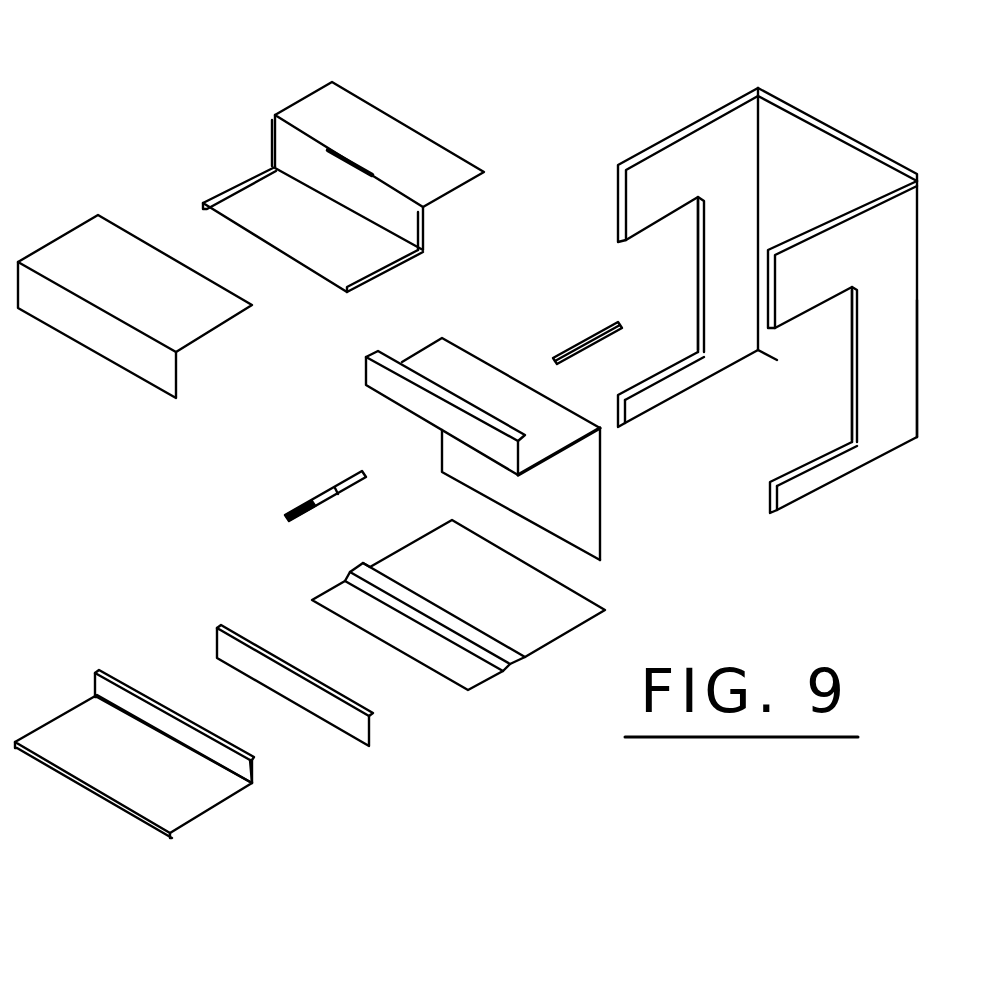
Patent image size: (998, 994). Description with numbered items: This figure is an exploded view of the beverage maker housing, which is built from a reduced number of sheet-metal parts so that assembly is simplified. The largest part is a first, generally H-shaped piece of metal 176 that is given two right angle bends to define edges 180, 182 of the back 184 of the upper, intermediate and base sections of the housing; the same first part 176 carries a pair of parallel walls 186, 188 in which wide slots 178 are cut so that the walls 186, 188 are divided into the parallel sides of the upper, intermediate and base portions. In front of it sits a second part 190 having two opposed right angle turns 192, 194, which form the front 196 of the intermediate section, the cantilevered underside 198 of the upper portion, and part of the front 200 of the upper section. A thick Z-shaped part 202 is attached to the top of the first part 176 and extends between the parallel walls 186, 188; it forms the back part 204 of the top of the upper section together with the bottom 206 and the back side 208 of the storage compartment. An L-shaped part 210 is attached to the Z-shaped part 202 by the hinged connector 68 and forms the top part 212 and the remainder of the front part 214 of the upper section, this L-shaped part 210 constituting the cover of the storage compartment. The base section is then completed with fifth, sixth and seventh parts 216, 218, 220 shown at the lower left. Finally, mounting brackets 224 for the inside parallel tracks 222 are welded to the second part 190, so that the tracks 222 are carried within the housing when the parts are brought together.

The hinged connection 68 is at (343, 150).
The first generally H-shaped piece of metal 176 is at (781, 301).
The wide slots 178 is at (700, 272).
The edge 180 is at (920, 393).
The edge 182 is at (753, 158).
The back 184 is at (790, 170).
The parallel wall 186 is at (820, 223).
The parallel wall 188 is at (663, 142).
The second part 190 is at (480, 468).
The right angle turn 192 is at (528, 453).
The right angle turn 194 is at (592, 446).
The front of the intermediate section 196 is at (557, 517).
The cantilevered underside 198 is at (570, 455).
The front of the upper section 200 is at (383, 378).
The thick Z-shaped part 202 is at (340, 193).
The back part of the top 204 is at (398, 152).
The bottom of the storage compartment 206 is at (333, 250).
The back side of the storage compartment 208 is at (299, 162).
The L-shaped part 210 is at (150, 311).
The top part 212 is at (103, 268).
The front part 214 is at (103, 336).
The fifth part 216 is at (575, 608).
The sixth part 218 is at (343, 713).
The seventh part 220 is at (178, 805).
The inside parallel tracks 222 is at (300, 502).
The mounting brackets 224 is at (587, 338).